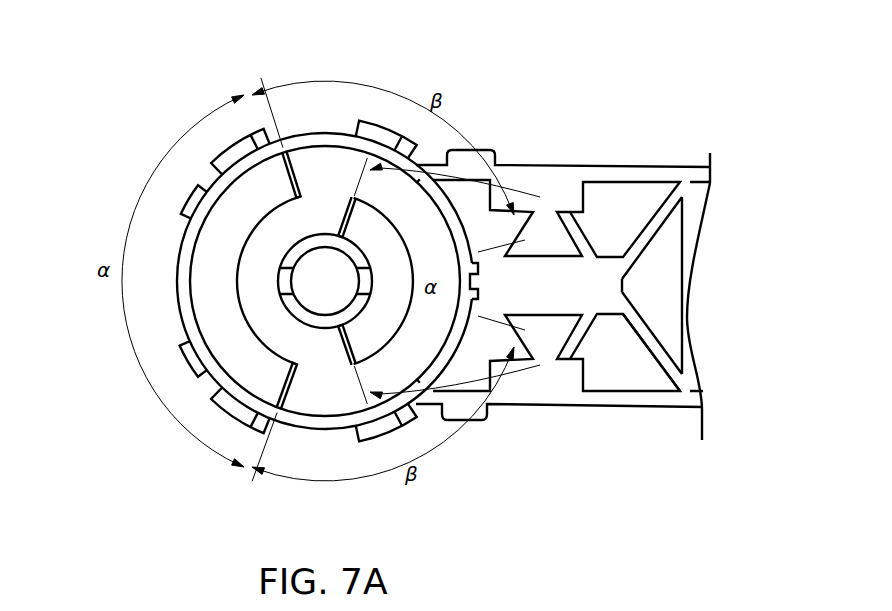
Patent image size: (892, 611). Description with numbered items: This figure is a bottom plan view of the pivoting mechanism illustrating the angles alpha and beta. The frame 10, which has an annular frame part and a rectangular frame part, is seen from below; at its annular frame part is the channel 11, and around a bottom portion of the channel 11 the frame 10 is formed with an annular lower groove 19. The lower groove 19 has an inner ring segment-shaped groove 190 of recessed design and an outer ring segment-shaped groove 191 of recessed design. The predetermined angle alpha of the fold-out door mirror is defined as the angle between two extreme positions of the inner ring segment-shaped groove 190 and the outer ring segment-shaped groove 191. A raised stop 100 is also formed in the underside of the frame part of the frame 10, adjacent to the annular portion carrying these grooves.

The frame 10 is at (304, 122).
The raised stop 100 is at (478, 263).
The outer ring segment-shaped groove 191 is at (216, 232).
The annular lower groove 19 is at (277, 344).
The inner ring segment-shaped groove 190 is at (380, 330).
The channel 11 is at (320, 290).